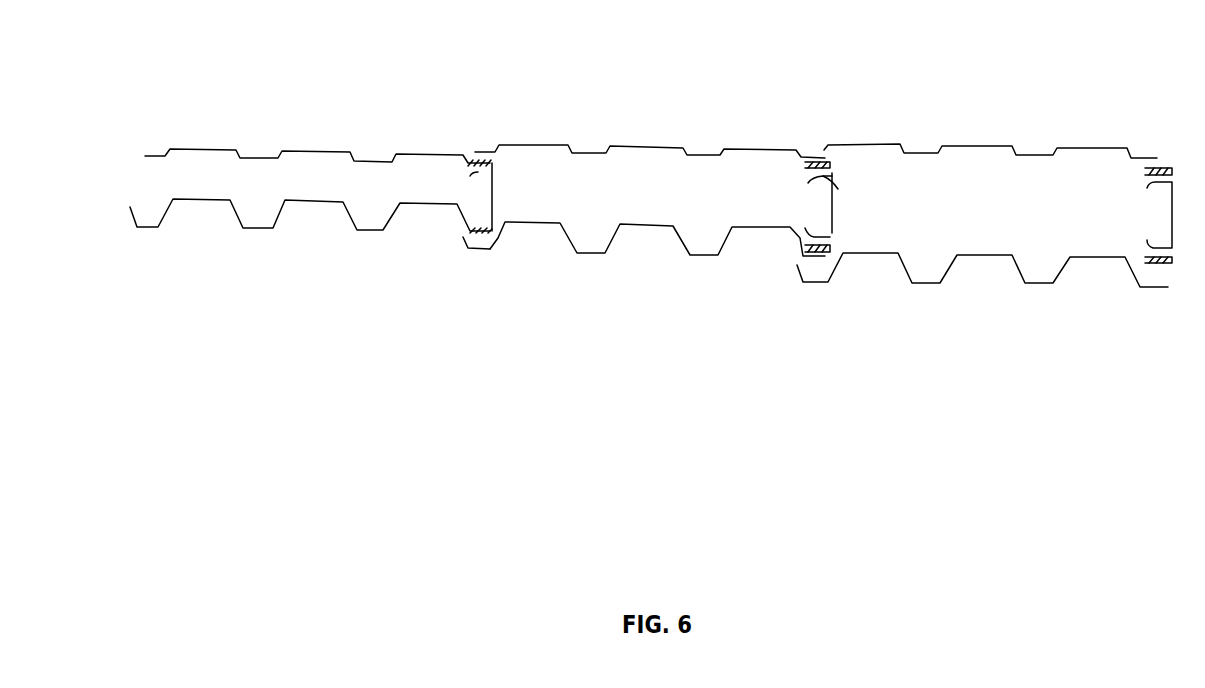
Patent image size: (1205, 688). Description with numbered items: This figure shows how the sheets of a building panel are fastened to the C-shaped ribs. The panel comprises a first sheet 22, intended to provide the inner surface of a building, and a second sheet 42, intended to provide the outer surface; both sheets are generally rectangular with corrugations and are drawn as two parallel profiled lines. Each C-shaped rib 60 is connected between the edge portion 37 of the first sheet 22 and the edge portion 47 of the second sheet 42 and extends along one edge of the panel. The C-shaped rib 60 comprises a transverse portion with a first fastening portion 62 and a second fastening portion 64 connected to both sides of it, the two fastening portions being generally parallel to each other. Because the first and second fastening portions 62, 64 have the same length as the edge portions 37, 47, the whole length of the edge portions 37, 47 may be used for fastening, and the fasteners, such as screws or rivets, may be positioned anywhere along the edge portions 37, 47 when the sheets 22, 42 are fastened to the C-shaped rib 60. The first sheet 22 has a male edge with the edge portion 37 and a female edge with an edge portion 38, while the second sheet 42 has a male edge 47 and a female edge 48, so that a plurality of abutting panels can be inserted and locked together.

The first sheet 22 is at (583, 73).
The second sheet 42 is at (1044, 84).
The edge portion of the second sheet 47 is at (810, 158).
The female edge of the second sheet 48 is at (825, 148).
The C-shaped rib 60 is at (489, 199).
The first fastening portion 62 is at (834, 227).
The second fastening portion 64 is at (838, 189).
The edge portion of the first sheet 37 is at (820, 263).
The edge portion of the female edge of the first sheet 38 is at (830, 272).